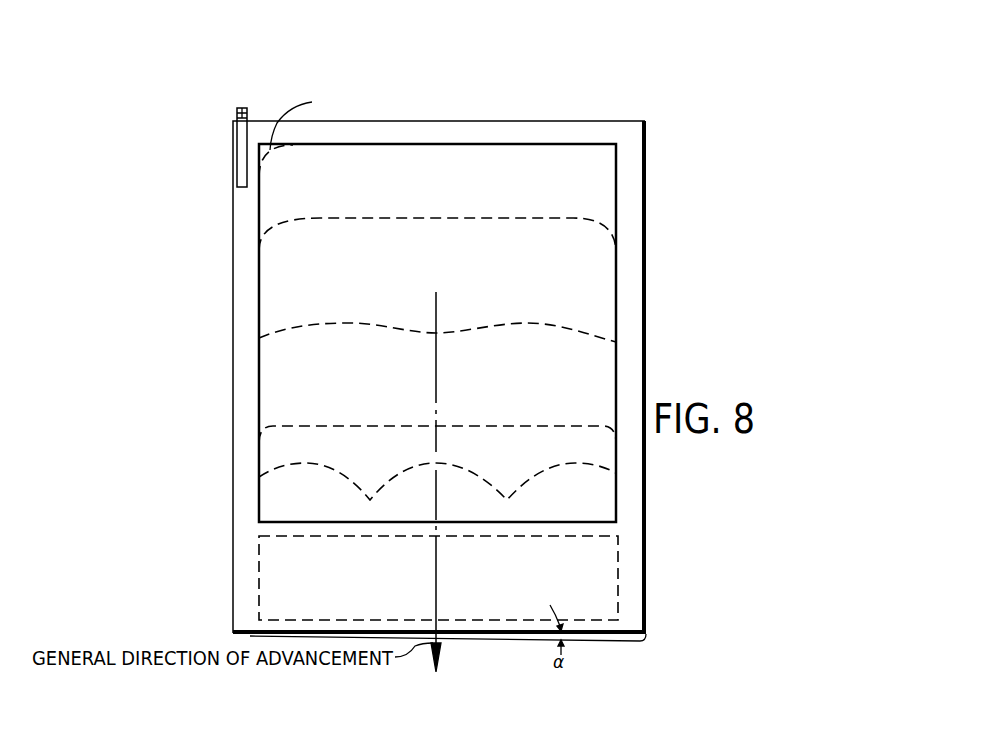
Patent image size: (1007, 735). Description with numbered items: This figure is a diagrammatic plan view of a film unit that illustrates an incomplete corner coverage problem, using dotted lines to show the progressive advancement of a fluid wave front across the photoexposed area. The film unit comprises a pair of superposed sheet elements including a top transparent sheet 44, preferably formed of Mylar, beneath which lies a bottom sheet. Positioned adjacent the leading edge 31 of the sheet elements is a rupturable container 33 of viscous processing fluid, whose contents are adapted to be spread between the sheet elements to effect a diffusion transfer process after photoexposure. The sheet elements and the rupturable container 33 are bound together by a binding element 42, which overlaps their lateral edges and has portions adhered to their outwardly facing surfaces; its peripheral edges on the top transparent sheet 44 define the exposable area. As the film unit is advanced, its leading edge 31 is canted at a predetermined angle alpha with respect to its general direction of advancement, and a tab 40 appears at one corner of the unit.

The leading edge 31 is at (647, 640).
The rupturable container 33 is at (620, 568).
The tab 40 is at (244, 108).
The binding element 42 is at (645, 298).
The top transparent sheet 44 is at (603, 190).